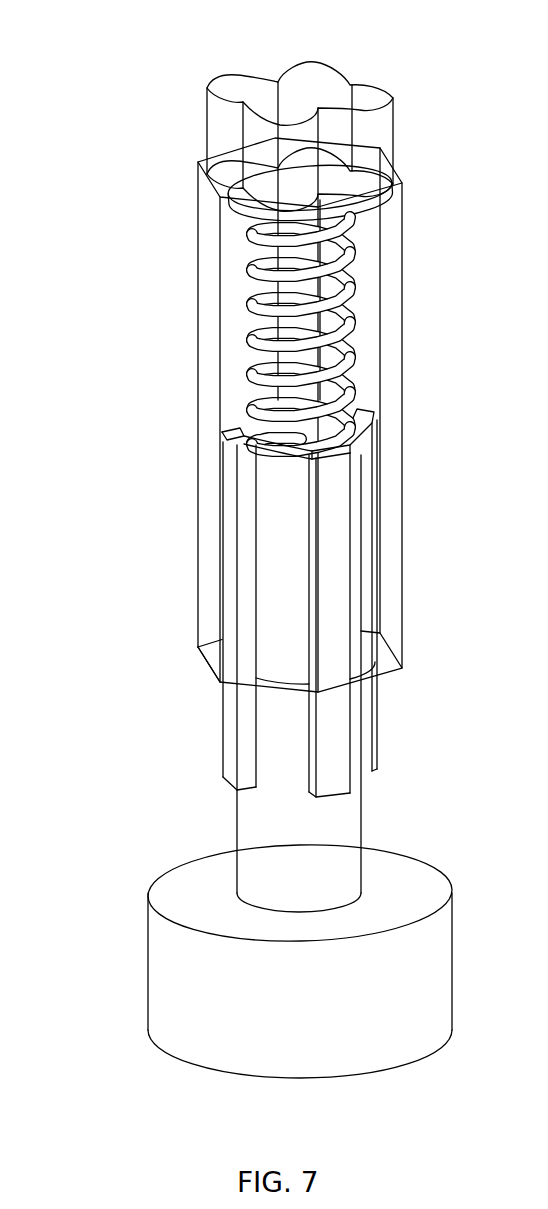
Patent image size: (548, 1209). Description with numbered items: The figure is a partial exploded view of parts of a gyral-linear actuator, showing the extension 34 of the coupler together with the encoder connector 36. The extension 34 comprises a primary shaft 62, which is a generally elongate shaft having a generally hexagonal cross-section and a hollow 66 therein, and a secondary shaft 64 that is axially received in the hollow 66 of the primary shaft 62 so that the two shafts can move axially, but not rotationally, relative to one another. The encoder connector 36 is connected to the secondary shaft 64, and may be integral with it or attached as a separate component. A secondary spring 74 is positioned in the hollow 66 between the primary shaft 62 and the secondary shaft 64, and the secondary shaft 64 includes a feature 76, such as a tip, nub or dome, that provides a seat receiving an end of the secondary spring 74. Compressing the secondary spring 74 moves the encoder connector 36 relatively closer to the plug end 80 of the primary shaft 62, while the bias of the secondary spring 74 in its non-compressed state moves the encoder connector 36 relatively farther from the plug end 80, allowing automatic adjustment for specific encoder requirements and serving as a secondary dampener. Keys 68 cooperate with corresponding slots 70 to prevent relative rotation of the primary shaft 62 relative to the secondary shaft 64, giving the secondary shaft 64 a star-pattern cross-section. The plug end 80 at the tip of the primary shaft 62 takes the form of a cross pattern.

The extension 34 is at (102, 110).
The encoder connector 36 is at (147, 958).
The primary shaft 62 is at (402, 377).
The secondary shaft 64 is at (237, 808).
The hollow 66 is at (235, 295).
The keys 68 is at (222, 737).
The slots 70 is at (373, 695).
The secondary spring 74 is at (250, 338).
The feature 76 is at (218, 688).
The plug end 80 is at (298, 67).